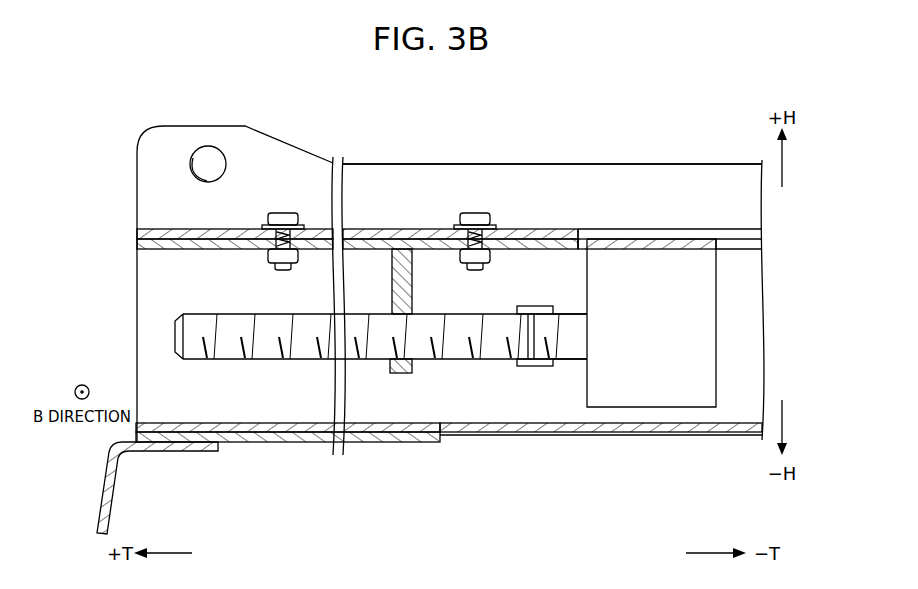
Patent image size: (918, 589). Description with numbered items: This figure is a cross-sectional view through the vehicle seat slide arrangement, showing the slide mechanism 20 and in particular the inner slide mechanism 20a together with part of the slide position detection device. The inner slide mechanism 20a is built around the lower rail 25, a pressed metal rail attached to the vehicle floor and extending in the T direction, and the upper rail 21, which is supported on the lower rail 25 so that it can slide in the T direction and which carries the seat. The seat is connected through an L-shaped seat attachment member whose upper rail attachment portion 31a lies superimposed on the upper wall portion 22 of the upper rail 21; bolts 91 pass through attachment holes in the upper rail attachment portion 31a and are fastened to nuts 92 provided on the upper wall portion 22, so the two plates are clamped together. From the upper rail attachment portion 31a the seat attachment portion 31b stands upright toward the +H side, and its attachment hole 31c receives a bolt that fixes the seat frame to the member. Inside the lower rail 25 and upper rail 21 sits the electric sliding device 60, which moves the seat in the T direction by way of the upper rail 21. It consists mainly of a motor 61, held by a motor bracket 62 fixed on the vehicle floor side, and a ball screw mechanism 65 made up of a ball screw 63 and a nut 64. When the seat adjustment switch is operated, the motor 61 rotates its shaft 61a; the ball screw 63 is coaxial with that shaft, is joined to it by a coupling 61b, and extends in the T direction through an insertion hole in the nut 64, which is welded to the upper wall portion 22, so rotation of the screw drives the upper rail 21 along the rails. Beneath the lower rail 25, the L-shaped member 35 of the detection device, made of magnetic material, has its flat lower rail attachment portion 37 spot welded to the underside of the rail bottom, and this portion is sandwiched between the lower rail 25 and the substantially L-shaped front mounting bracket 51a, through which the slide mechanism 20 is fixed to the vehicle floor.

The slide mechanism 20 is at (420, 254).
The inner slide mechanism 20a is at (424, 272).
The upper rail 21 is at (398, 234).
The upper wall portion 22 is at (425, 243).
The lower rail 25 is at (449, 472).
The upper rail attachment portion 31a is at (311, 228).
The seat attachment portion 31b is at (370, 193).
The attachment hole 31c is at (207, 182).
The L-shaped member 35 is at (278, 443).
The lower rail attachment portion 37 is at (238, 442).
The front mounting bracket 51a is at (118, 463).
The electric sliding device 60 is at (666, 371).
The motor 61 is at (648, 390).
The shaft 61a is at (568, 348).
The coupling 61b is at (527, 367).
The motor bracket 62 is at (658, 243).
The ball screw 63 is at (307, 360).
The nut 64 is at (405, 373).
The ball screw mechanism 65 is at (381, 418).
The bolts 91 is at (283, 213).
The nuts 92 is at (266, 255).